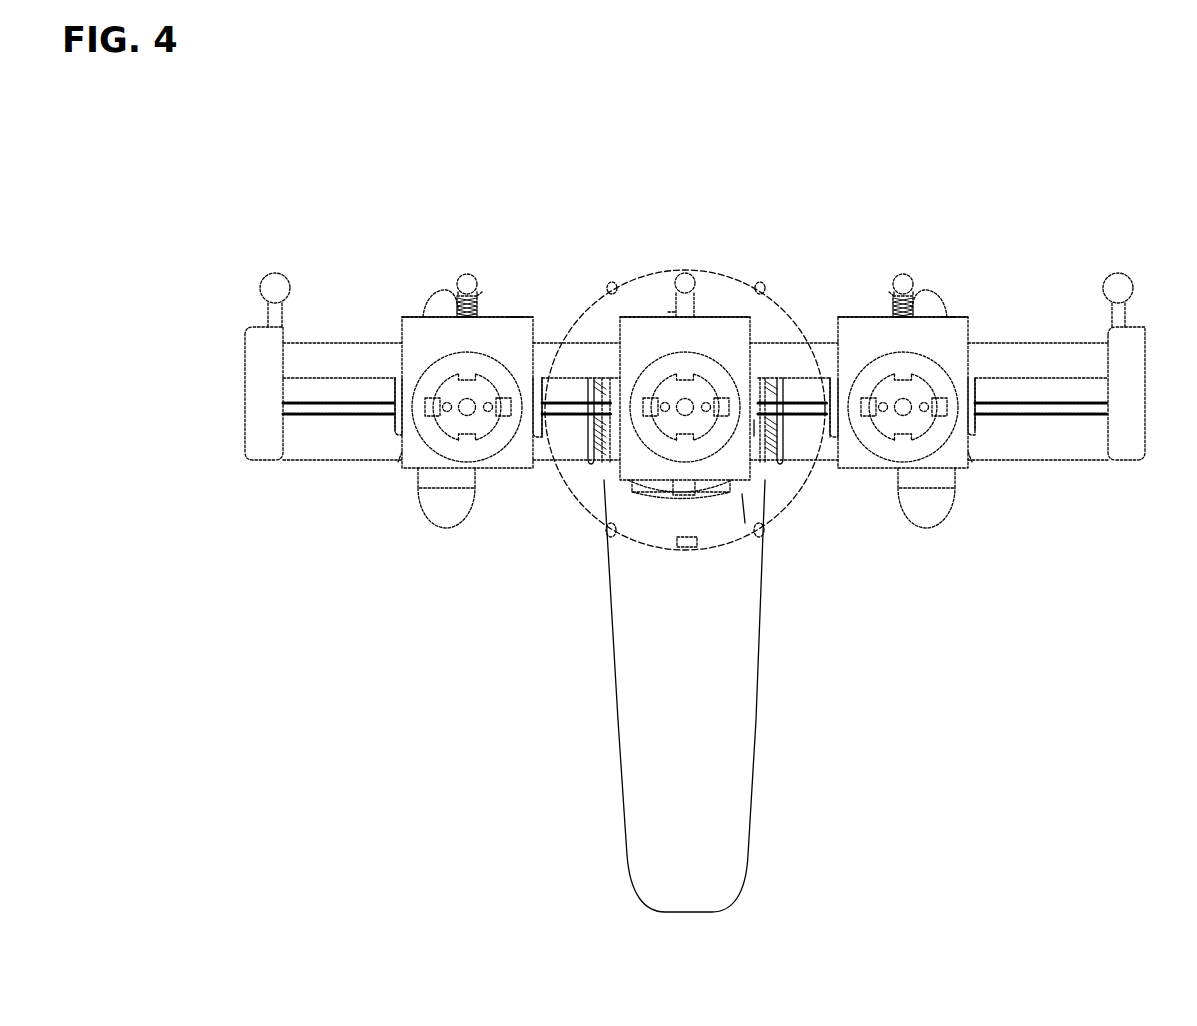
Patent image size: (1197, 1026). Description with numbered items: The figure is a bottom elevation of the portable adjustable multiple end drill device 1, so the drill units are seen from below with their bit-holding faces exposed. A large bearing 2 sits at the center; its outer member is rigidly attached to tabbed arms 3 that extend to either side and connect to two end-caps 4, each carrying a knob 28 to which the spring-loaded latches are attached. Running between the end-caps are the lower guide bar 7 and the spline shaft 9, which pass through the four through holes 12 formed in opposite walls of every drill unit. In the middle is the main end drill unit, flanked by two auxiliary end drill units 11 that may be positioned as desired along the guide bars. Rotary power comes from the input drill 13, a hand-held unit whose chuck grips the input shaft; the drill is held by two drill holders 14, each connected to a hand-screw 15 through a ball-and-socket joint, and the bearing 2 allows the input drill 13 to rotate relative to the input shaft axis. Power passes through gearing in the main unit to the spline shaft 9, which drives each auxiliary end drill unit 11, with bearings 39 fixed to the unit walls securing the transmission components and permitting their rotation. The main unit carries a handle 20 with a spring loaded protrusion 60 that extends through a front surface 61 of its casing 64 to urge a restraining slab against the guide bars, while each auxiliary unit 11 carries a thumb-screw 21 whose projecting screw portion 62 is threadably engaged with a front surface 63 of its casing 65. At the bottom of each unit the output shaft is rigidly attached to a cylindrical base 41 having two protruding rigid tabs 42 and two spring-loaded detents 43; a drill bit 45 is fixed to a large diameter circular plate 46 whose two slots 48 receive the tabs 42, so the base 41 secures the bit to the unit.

The portable adjustable multiple end drill device 1 is at (701, 366).
The large bearing 2 is at (733, 527).
The tabbed arms 3 is at (335, 440).
The end-caps 4 is at (262, 360).
The lower guide bar 7 is at (1090, 360).
The spline shaft 9 is at (1028, 408).
The auxiliary end drill unit 11 is at (490, 325).
The through holes 12 is at (630, 330).
The input drill 13 is at (737, 643).
The drill holders 14 is at (616, 283).
The hand-screw 15 is at (440, 300).
The handle 20 is at (685, 273).
The thumb-screw 21 is at (467, 274).
The knob 28 is at (270, 285).
The bearing 39 is at (397, 435).
The base 41 is at (497, 445).
The protruding rigid tabs 42 is at (428, 397).
The spring-loaded detents 43 is at (485, 403).
The drill bit 45 is at (655, 387).
The large diameter circular plate 46 is at (497, 380).
The slots 48 is at (463, 372).
The spring loaded protrusion 60 is at (698, 300).
The front surface 61 is at (671, 312).
The projecting screw portion 62 is at (480, 295).
The front surface 63 is at (515, 316).
The casing 64 is at (745, 523).
The casing 65 is at (403, 462).